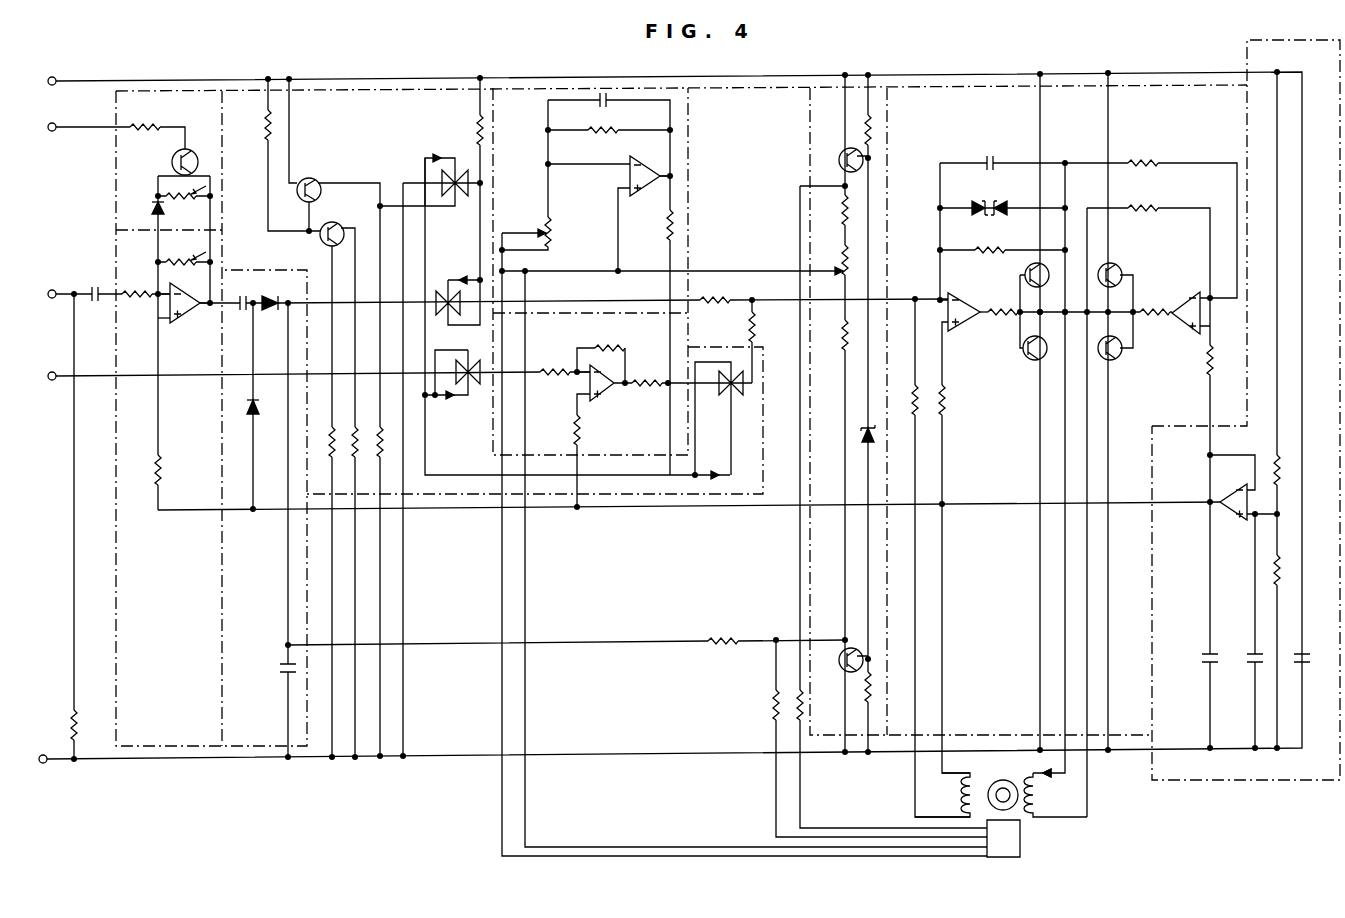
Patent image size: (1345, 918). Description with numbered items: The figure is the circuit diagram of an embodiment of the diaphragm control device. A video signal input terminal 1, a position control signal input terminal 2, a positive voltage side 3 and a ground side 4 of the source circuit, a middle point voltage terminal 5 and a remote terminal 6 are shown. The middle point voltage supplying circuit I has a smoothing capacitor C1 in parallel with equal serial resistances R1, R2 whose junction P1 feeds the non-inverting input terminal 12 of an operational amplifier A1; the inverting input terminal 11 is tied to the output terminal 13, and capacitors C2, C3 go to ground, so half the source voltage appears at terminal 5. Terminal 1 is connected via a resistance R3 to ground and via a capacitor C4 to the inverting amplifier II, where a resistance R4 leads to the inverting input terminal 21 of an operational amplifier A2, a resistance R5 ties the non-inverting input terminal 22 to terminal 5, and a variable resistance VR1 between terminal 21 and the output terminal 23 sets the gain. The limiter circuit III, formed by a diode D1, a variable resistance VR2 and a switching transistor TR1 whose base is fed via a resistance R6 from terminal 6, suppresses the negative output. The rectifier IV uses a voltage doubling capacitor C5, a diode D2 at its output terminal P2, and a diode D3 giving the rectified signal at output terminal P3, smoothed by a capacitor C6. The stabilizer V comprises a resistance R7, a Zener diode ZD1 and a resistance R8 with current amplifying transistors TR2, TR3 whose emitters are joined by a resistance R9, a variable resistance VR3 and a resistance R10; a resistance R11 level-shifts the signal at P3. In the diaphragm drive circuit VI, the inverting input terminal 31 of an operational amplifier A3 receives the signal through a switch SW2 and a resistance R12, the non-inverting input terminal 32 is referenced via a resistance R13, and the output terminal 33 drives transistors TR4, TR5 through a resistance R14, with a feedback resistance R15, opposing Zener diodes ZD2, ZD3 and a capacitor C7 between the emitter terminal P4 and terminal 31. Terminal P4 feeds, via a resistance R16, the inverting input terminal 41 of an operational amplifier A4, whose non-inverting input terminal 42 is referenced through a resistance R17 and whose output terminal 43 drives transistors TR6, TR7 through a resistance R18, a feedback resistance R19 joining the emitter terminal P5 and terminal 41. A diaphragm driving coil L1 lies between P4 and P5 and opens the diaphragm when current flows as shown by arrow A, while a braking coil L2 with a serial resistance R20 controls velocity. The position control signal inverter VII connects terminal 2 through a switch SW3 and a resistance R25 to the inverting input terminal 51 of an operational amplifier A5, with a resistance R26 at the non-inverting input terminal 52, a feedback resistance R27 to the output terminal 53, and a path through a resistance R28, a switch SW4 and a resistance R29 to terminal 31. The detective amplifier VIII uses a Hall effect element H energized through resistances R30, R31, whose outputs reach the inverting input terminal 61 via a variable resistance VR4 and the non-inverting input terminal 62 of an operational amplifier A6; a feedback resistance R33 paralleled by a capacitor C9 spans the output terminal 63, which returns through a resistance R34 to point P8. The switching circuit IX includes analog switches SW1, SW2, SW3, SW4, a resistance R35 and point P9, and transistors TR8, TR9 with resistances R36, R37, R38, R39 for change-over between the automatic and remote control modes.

The video signal input terminal 1 is at (52, 291).
The position control signal input terminal 2 is at (52, 373).
The positive voltage side of source circuit 3 is at (75, 80).
The ground side of source circuit 4 is at (62, 760).
The middle point voltage terminal 5 is at (203, 512).
The remote terminal 6 is at (57, 125).
The inverting input terminal of operational amplifier A1 11 is at (1250, 487).
The non-inverting input terminal of operational amplifier A1 12 is at (1248, 517).
The output terminal of operational amplifier A1 13 is at (1218, 494).
The inverting input terminal of operational amplifier A2 21 is at (163, 306).
The non-inverting input terminal of operational amplifier A2 22 is at (165, 325).
The output terminal of operational amplifier A2 23 is at (200, 304).
The inverting input terminal of operational amplifier A3 31 is at (950, 296).
The non-inverting input terminal of operational amplifier A3 32 is at (950, 326).
The output terminal of operational amplifier A3 33 is at (977, 314).
The inverting input terminal of operational amplifier A4 41 is at (1203, 293).
The non-inverting input terminal of operational amplifier A4 42 is at (1203, 326).
The output terminal of operational amplifier A4 43 is at (1166, 316).
The inverting input terminal of operational amplifier A5 51 is at (586, 376).
The non-inverting input terminal of operational amplifier A5 52 is at (586, 395).
The output terminal of operational amplifier A5 53 is at (617, 367).
The inverting input terminal of operational amplifier A6 61 is at (632, 165).
The non-inverting input terminal of operational amplifier A6 62 is at (622, 187).
The output terminal of operational amplifier A6 63 is at (657, 178).
The middle point voltage supplying circuit I is at (1236, 768).
The inverting amplifier II is at (150, 742).
The limiter circuit III is at (157, 92).
The rectifier IV is at (265, 742).
The stabilizer V is at (823, 103).
The diaphragm drive circuit VI is at (942, 103).
The position control signal inverter VII is at (642, 447).
The detective amplifier VIII is at (548, 95).
The switching circuit IX is at (467, 485).
The arrow A is at (1061, 779).
The operational amplifier A1 is at (1227, 508).
The operational amplifier A2 is at (190, 320).
The operational amplifier A3 is at (968, 320).
The operational amplifier A4 is at (1185, 327).
The operational amplifier A5 is at (611, 399).
The operational amplifier A6 is at (658, 177).
The smoothing capacitor C1 is at (1312, 665).
The capacitor C2 is at (1242, 632).
The capacitor C3 is at (1196, 663).
The capacitor C4 is at (101, 284).
The voltage doubling capacitor C5 is at (240, 294).
The capacitor C6 is at (275, 701).
The capacitor C7 is at (990, 154).
The capacitor C9 is at (614, 111).
The diode D1 is at (145, 211).
The diode D2 is at (265, 422).
The diode D3 is at (275, 294).
The Zener diode ZD1 is at (859, 433).
The Zener diode ZD2 is at (964, 198).
The Zener diode ZD3 is at (1025, 198).
The Hall effect element H is at (1005, 848).
The diaphragm driving coil L1 is at (1055, 795).
The braking coil L2 is at (942, 795).
The junction of resistances R1, R2 P1 is at (1266, 505).
The output terminal of capacitor C5 P2 is at (252, 307).
The output terminal of rectifier P3 is at (288, 307).
The emitter terminal P4 is at (1055, 312).
The emitter terminal P5 is at (1080, 312).
The point of position control signal inverter P8 is at (668, 387).
The point P9 is at (482, 183).
The resistance R1 is at (1268, 312).
The resistance R2 is at (1283, 564).
The resistance R3 is at (59, 528).
The resistance R4 is at (145, 282).
The resistance R5 is at (171, 471).
The resistance R6 is at (152, 115).
The resistance R7 is at (872, 128).
The resistance R8 is at (871, 682).
The resistance R9 is at (831, 211).
The resistance R10 is at (829, 337).
The resistance R11 is at (722, 629).
The resistance R12 is at (713, 290).
The resistance R13 is at (958, 579).
The resistance R14 is at (998, 302).
The feedback resistance R15 is at (1002, 242).
The resistance R16 is at (1151, 217).
The resistance R17 is at (1227, 548).
The resistance R18 is at (1153, 302).
The feedback resistance R19 is at (1148, 264).
The serial resistance R20 is at (918, 410).
The resistance R25 is at (549, 360).
The resistance R26 is at (558, 462).
The feedback resistance R27 is at (599, 354).
The resistance R28 is at (690, 373).
The resistance R29 is at (769, 340).
The resistance R30 is at (798, 708).
The resistance R31 is at (864, 737).
The feedback resistance R33 is at (609, 122).
The resistance R34 is at (651, 234).
The resistance R35 is at (461, 177).
The resistance R36 is at (275, 155).
The resistance R37 is at (354, 455).
The resistance R38 is at (331, 440).
The resistance R39 is at (379, 470).
The analog switch SW1 is at (447, 195).
The analog switch SW2 is at (457, 291).
The analog switch SW3 is at (458, 390).
The analog switch SW4 is at (717, 397).
The switching transistor TR1 is at (169, 159).
The current amplifying transistor TR2 is at (840, 153).
The current amplifying transistor TR3 is at (840, 674).
The switching transistor TR4 is at (1014, 273).
The switching transistor TR5 is at (1021, 362).
The switching transistor TR6 is at (1125, 267).
The switching transistor TR7 is at (1121, 364).
The switching transistor TR8 is at (339, 311).
The switching transistor TR9 is at (361, 191).
The variable resistance VR1 is at (184, 250).
The variable resistance VR2 is at (184, 205).
The variable resistance VR3 is at (826, 261).
The variable resistance VR4 is at (568, 232).